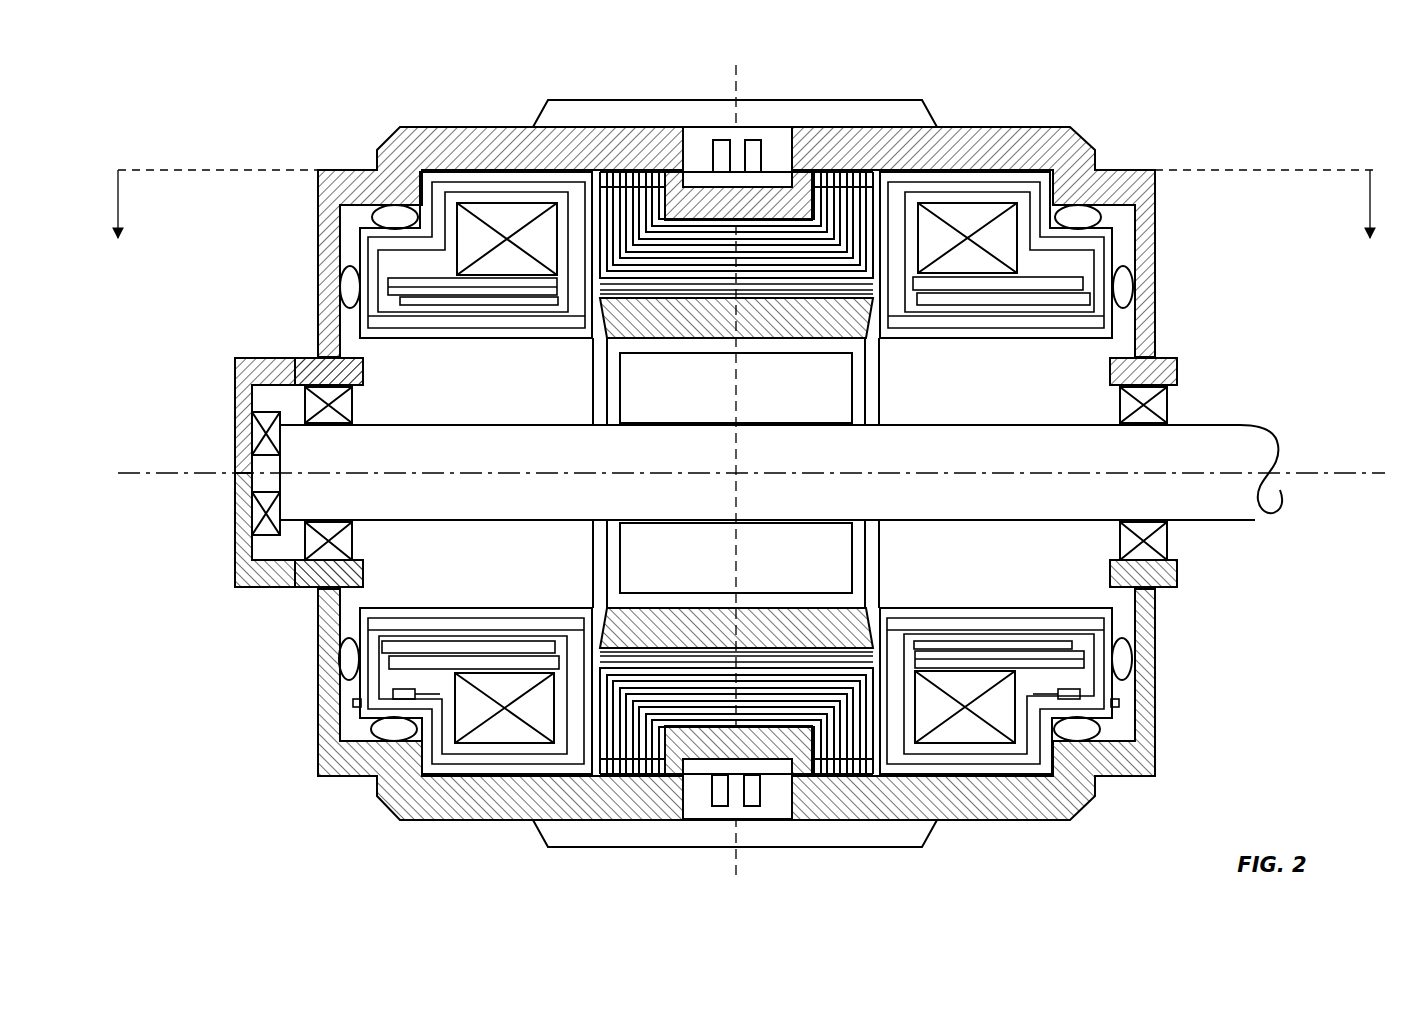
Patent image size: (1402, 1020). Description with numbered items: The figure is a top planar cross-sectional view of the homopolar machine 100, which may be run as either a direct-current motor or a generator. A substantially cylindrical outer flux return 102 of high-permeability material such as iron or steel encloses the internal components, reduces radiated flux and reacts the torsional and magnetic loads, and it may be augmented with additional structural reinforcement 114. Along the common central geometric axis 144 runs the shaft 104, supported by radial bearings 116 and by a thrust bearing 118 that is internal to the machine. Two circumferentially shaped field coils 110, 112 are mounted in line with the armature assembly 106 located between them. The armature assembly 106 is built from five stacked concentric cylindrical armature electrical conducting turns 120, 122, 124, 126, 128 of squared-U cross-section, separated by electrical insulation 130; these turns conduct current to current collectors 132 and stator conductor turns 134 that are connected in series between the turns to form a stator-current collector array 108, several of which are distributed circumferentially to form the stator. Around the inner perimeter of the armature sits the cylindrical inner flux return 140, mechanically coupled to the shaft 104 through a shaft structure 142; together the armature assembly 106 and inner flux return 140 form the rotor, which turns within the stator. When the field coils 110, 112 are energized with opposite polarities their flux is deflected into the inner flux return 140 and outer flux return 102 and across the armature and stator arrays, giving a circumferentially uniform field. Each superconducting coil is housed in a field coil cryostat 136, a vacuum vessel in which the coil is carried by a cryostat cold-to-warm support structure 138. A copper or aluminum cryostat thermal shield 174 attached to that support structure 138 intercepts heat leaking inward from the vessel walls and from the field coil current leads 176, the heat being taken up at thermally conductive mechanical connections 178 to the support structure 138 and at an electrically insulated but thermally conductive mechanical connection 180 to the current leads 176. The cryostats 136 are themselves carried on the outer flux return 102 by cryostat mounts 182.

The homopolar machine 100 is at (288, 108).
The outer flux return 102 is at (1028, 132).
The shaft 104 is at (1225, 425).
The armature assembly 106 is at (913, 277).
The stator-current collector array 108 is at (822, 162).
The field coil 110 is at (507, 263).
The field coil 112 is at (973, 267).
The additional structural reinforcement 114 is at (786, 101).
The radial bearing 116 is at (345, 405).
The thrust bearing 118 is at (277, 432).
The armature electrical conducting turn 120 is at (720, 287).
The armature electrical conducting turn 122 is at (653, 677).
The armature electrical conducting turn 124 is at (695, 688).
The armature electrical conducting turn 126 is at (753, 243).
The armature electrical conducting turn 128 is at (742, 717).
The electrical insulation 130 is at (668, 277).
The current collector 132 is at (615, 185).
The stator conductor turn 134 is at (663, 172).
The field coil cryostat 136 is at (1121, 252).
The cryostat cold-to-warm support structure 138 is at (401, 302).
The inner flux return 140 is at (636, 326).
The shaft structure 142 is at (862, 410).
The common central geometric axis 144 is at (172, 472).
The cryostat thermal shield 174 is at (1023, 193).
The field coil current lead 176 is at (355, 708).
The thermally conductive mechanical connection 178 is at (886, 273).
The electrically insulated thermally conductive mechanical connection 180 is at (396, 694).
The cryostat mount 182 is at (345, 287).